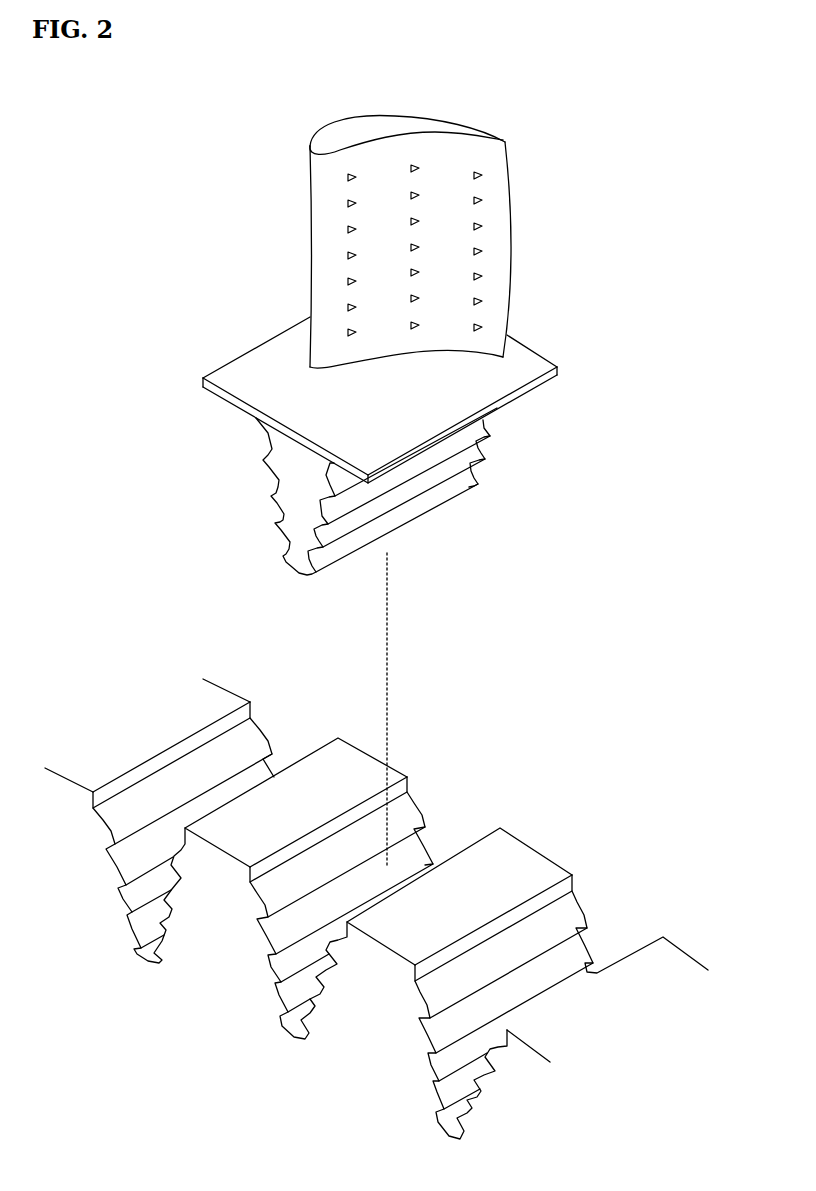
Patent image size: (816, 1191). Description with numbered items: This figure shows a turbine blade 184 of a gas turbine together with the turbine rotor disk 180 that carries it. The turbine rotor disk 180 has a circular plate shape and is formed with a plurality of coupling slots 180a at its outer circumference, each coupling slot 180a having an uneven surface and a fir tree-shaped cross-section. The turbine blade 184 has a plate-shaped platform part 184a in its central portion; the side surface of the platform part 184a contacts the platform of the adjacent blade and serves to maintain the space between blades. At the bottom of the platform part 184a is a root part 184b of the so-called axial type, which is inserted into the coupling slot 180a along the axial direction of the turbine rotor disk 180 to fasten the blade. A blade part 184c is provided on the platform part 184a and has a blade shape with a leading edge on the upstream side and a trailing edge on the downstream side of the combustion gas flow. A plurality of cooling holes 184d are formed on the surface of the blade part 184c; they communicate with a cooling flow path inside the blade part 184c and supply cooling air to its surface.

The turbine rotor disk 180 is at (376, 887).
The coupling slot 180a is at (190, 805).
The turbine blade 184 is at (388, 325).
The platform part 184a is at (240, 378).
The root part 184b is at (285, 457).
The blade part 184c is at (323, 215).
The cooling holes 184d is at (353, 180).